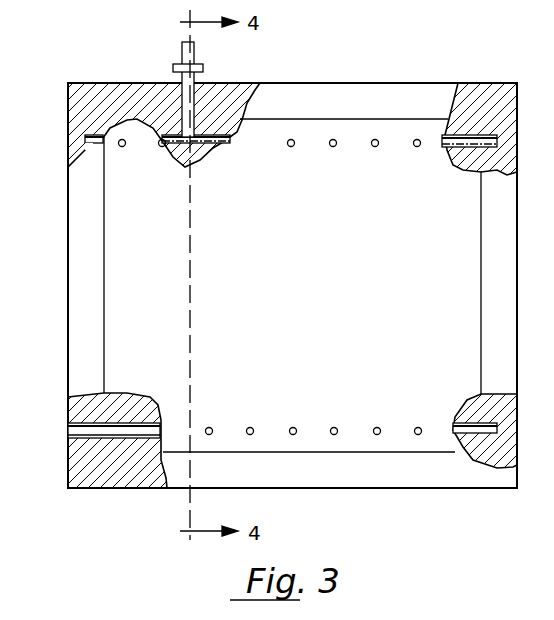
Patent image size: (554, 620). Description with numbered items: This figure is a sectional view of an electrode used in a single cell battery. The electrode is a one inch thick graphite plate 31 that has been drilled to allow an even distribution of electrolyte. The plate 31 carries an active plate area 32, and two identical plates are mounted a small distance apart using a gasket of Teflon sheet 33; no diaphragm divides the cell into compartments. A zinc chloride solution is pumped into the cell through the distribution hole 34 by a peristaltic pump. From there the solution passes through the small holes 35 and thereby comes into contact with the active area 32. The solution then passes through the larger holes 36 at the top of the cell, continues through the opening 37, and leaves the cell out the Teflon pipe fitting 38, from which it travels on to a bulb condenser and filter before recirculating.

The graphite plate 31 is at (84, 112).
The active plate area 32 is at (124, 258).
The Teflon sheet gasket 33 is at (363, 93).
The distribution hole 34 is at (70, 433).
The holes 35 is at (250, 426).
The holes 36 is at (124, 148).
The opening 37 is at (211, 145).
The Teflon pipe fitting 38 is at (178, 64).